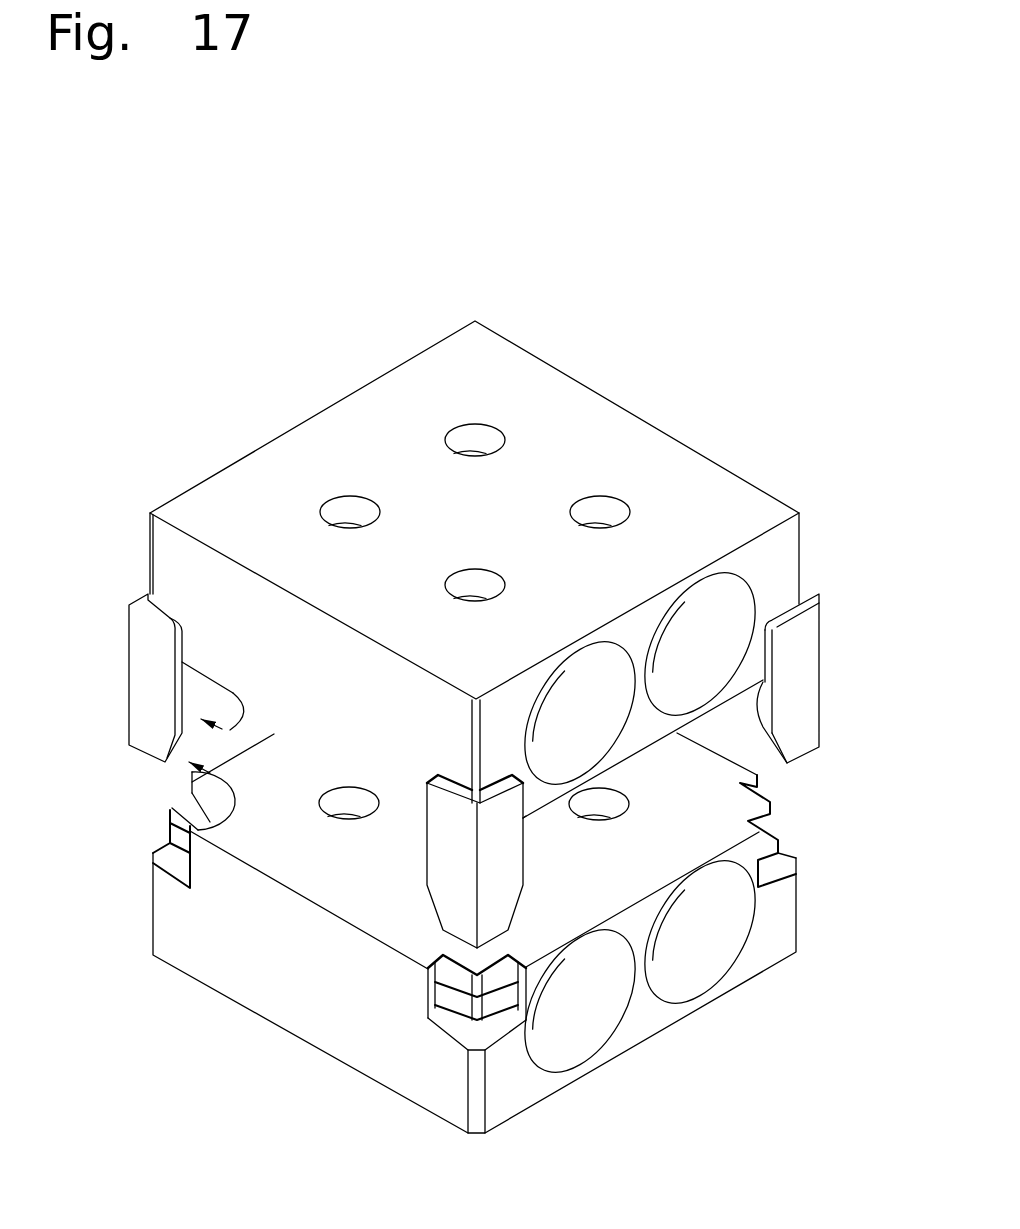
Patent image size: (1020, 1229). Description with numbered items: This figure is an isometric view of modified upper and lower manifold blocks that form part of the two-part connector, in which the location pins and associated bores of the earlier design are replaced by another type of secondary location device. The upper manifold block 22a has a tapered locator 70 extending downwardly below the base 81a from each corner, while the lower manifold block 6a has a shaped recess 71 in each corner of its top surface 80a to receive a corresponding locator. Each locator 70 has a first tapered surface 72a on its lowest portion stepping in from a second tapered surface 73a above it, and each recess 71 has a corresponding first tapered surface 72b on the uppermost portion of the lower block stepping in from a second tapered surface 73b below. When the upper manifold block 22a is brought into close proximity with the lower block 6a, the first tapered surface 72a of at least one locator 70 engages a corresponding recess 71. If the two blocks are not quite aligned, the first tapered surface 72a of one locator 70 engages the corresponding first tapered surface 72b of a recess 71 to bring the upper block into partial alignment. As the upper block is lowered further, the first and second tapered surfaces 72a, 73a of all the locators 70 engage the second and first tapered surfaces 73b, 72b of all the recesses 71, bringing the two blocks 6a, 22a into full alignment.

The upper manifold block 22a is at (642, 372).
The tapered locator 70 is at (830, 619).
The second tapered surface 73a is at (427, 818).
The first tapered surface 72a is at (172, 808).
The top surface 80a is at (288, 827).
The base 81a is at (722, 706).
The shaped recess 71 is at (798, 831).
The lower manifold block 6a is at (291, 1072).
The first tapered surface 72b is at (503, 985).
The second tapered surface 73b is at (499, 1025).